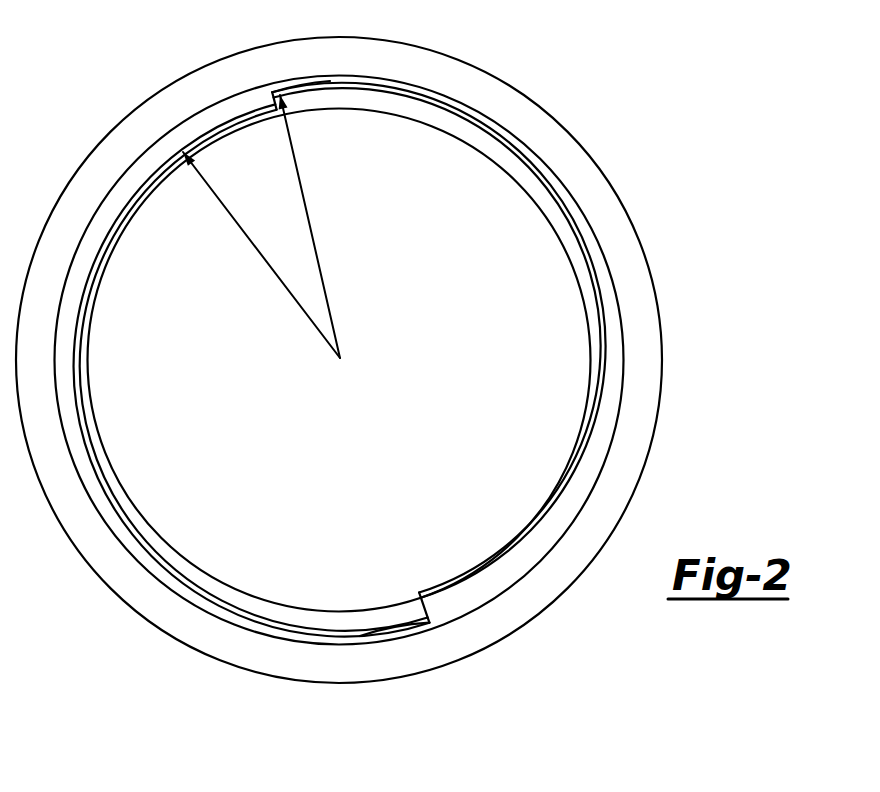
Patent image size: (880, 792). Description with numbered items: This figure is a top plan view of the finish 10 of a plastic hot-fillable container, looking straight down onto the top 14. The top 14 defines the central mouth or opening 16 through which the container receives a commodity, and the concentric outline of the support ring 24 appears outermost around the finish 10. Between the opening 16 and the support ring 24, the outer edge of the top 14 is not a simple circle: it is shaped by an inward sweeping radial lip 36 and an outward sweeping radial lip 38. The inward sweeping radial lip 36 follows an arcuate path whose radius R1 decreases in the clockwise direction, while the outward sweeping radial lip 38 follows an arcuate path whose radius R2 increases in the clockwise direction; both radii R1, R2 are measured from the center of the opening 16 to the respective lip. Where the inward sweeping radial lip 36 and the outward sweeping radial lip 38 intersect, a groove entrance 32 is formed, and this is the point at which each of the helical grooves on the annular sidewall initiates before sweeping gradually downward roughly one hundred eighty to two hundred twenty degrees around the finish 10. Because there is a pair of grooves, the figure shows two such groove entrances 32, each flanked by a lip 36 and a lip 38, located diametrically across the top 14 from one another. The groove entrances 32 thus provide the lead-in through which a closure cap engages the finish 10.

The finish 10 is at (106, 86).
The top 14 is at (340, 359).
The opening 16 is at (590, 331).
The support ring 24 is at (628, 247).
The groove entrance 32 is at (262, 118).
The inward sweeping radial lip 36 is at (250, 113).
The outward sweeping radial lip 38 is at (303, 86).
The radius of the inward sweeping radial lip R1 is at (271, 270).
The radius of the outward sweeping radial lip R2 is at (314, 241).